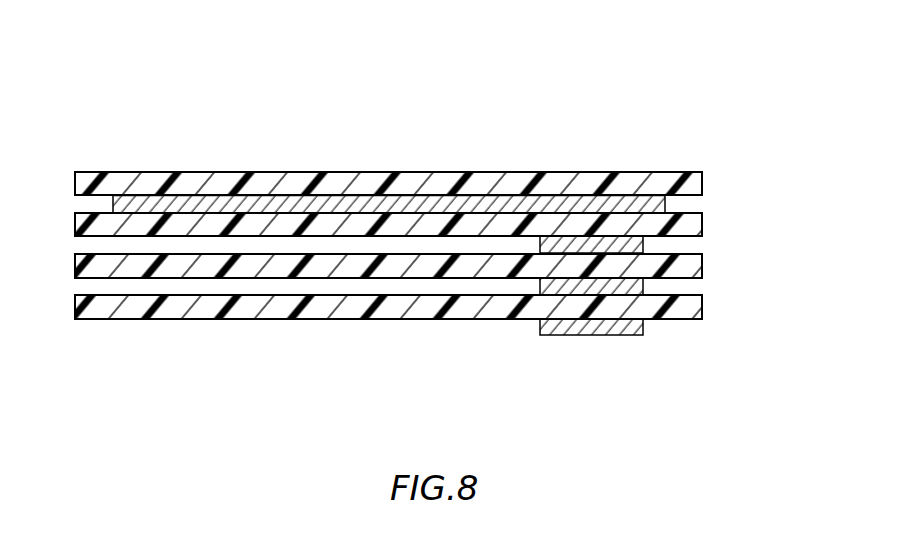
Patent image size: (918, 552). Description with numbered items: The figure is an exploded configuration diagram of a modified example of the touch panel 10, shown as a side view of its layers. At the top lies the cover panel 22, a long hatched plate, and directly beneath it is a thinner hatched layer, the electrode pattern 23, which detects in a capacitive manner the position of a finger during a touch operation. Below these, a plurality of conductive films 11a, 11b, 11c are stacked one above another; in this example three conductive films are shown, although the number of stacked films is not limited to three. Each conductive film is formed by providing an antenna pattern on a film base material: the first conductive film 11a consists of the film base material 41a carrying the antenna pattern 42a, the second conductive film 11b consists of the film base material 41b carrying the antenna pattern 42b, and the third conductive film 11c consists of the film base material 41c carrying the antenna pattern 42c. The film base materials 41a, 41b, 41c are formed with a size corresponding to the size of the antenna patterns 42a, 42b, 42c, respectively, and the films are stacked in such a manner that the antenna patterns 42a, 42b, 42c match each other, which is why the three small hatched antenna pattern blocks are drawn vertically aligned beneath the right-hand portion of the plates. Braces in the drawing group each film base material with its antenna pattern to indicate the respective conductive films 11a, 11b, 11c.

The touch panel 10 is at (513, 83).
The cover panel 22 is at (185, 182).
The electrode pattern 23 is at (112, 205).
The conductive film 11a is at (788, 192).
The conductive film 11b is at (788, 258).
The conductive film 11c is at (788, 328).
The film base material 41a is at (695, 223).
The antenna pattern 42a is at (643, 242).
The film base material 41b is at (693, 268).
The antenna pattern 42b is at (645, 281).
The film base material 41c is at (702, 314).
The antenna pattern 42c is at (643, 328).